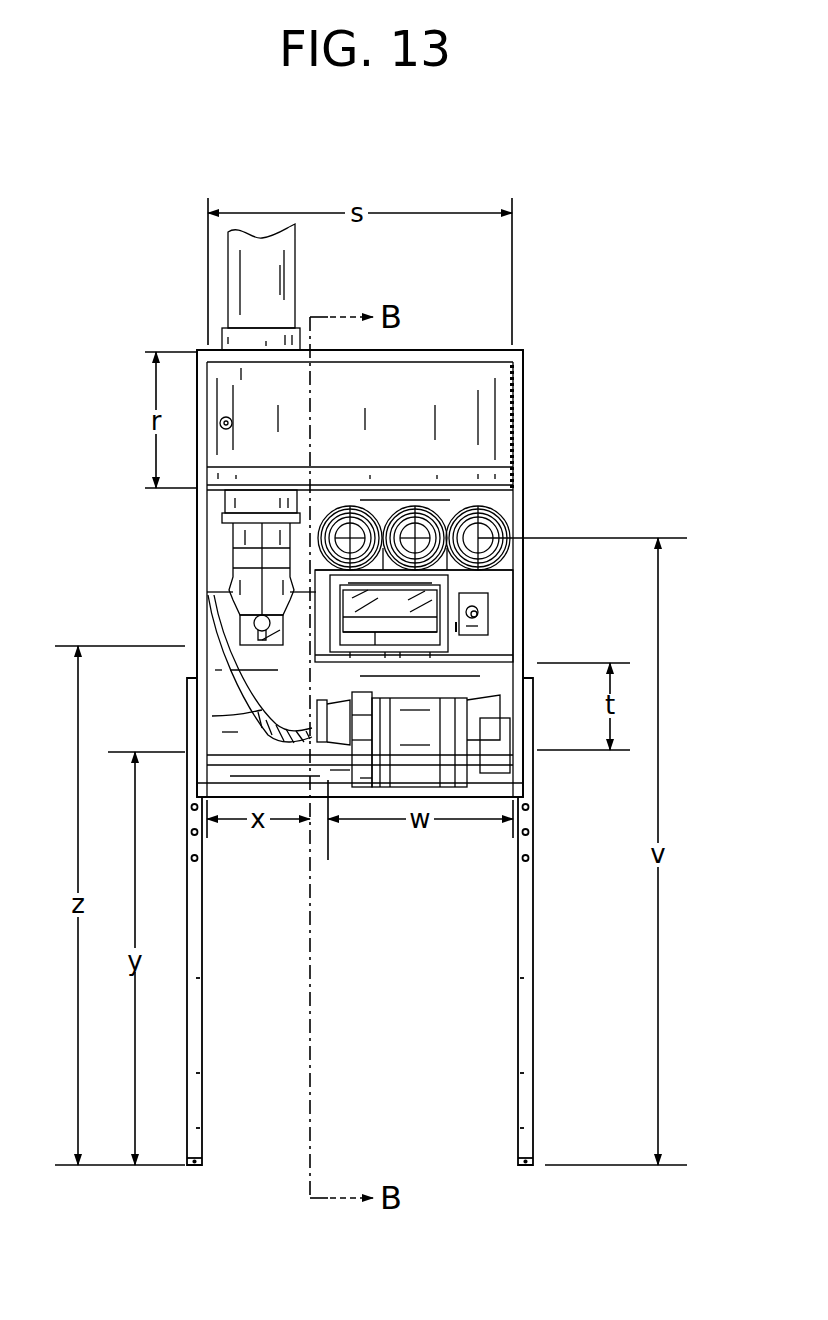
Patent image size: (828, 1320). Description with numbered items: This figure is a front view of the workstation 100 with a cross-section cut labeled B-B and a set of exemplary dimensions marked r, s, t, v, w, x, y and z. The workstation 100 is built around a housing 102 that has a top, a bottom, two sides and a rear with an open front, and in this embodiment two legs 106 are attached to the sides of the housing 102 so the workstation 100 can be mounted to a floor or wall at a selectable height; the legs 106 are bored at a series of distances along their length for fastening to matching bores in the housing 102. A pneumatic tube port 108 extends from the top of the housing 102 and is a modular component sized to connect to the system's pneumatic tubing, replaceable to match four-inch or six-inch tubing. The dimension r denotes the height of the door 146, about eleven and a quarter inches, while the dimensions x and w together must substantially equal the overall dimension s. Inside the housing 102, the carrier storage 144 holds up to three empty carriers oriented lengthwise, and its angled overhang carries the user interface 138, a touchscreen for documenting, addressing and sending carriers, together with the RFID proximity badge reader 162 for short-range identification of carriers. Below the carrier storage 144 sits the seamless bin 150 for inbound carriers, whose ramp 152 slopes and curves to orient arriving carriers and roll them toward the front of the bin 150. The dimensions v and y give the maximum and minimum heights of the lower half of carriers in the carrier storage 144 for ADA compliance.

The workstation 100 is at (597, 343).
The housing 102 is at (405, 350).
The legs 106 is at (203, 968).
The pneumatic tube port 108 is at (300, 328).
The user interface 138 is at (430, 603).
The carrier storage 144 is at (473, 570).
The door 146 is at (458, 430).
The bin 150 is at (473, 765).
The ramp 152 is at (250, 713).
The RFID proximity badge reader 162 is at (487, 625).